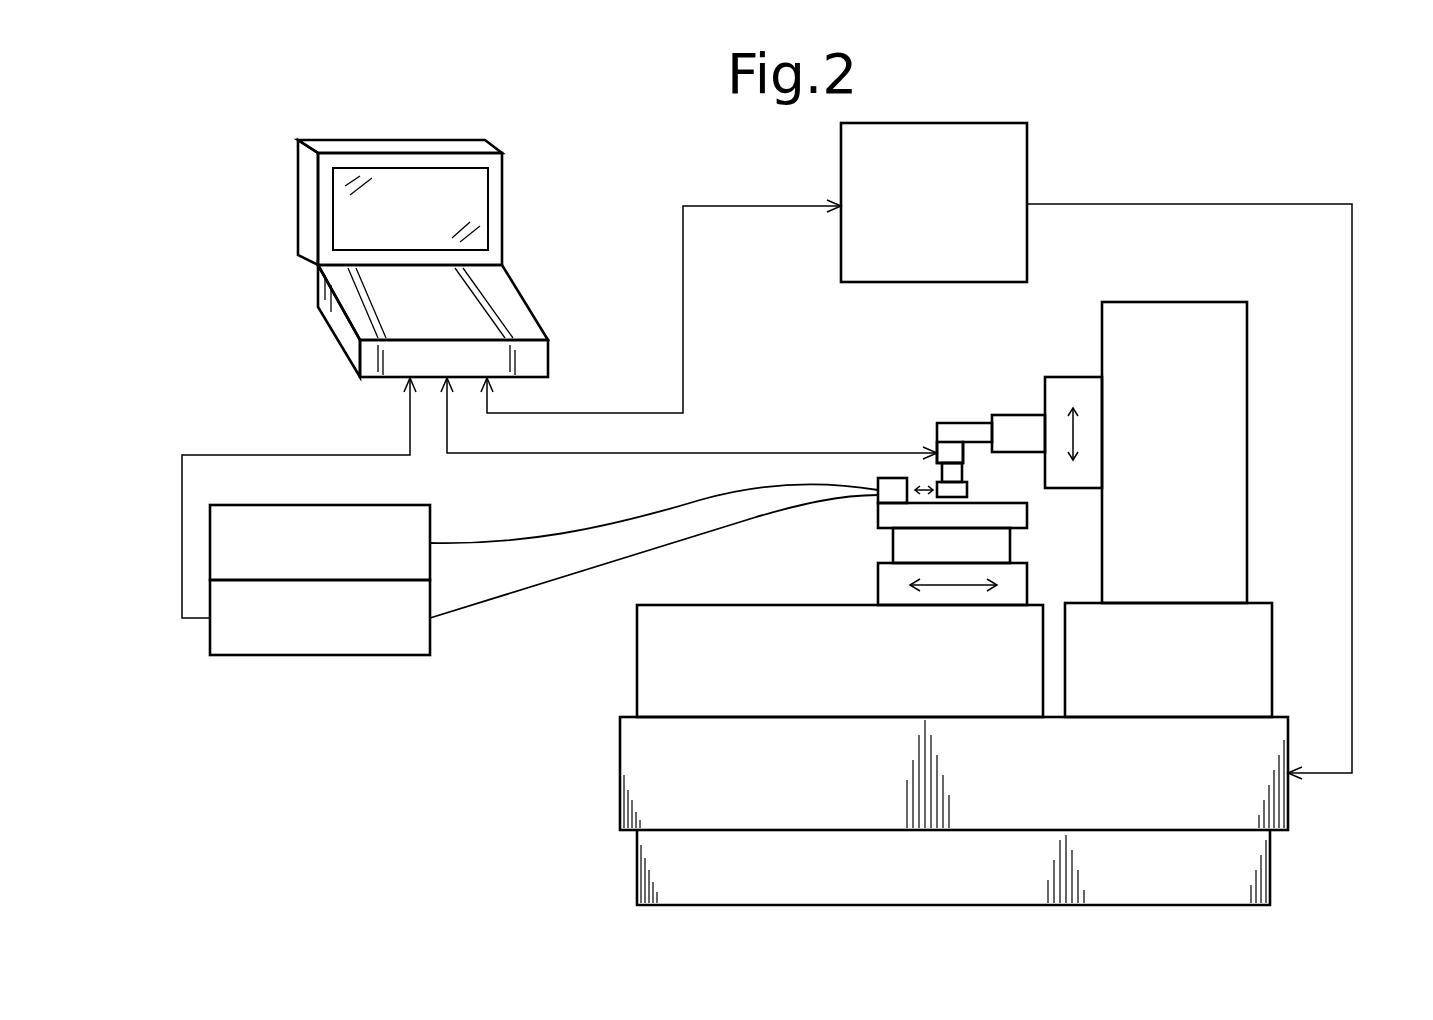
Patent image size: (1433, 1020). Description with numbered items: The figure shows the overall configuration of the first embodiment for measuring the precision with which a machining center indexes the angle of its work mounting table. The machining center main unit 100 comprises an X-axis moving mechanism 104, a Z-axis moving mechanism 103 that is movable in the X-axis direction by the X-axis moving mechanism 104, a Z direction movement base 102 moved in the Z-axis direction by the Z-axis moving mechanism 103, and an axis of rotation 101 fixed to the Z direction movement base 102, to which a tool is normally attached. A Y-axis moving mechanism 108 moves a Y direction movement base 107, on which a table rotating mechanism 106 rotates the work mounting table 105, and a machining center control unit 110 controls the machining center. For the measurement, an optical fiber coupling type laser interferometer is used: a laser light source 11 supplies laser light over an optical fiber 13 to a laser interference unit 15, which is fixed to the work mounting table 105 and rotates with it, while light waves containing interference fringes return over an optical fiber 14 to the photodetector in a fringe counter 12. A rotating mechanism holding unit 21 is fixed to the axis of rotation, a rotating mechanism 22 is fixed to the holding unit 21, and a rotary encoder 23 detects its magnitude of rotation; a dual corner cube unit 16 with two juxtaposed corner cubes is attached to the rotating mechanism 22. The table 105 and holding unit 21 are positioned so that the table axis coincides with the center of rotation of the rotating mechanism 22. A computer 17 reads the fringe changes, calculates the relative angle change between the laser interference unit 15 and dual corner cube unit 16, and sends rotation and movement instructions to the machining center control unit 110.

The laser light source 11 is at (298, 504).
The fringe counter 12 is at (298, 657).
The optical fiber 13 is at (545, 540).
The optical fiber 14 is at (466, 607).
The laser interference unit 15 is at (878, 478).
The dual corner cube unit 16 is at (967, 490).
The computer 17 is at (520, 300).
The rotating mechanism holding unit 21 is at (950, 423).
The rotating mechanism 22 is at (937, 447).
The rotary encoder 23 is at (963, 473).
The main unit 100 is at (620, 770).
The axis of rotation 101 is at (1012, 415).
The Z direction movement base 102 is at (1050, 377).
The Z-axis moving mechanism 103 is at (1188, 302).
The X-axis moving mechanism 104 is at (1273, 653).
The work mounting table 105 is at (878, 517).
The table rotating mechanism 106 is at (1010, 557).
The Y direction movement base 107 is at (878, 568).
The Y-axis moving mechanism 108 is at (637, 668).
The machining center control unit 110 is at (1028, 178).